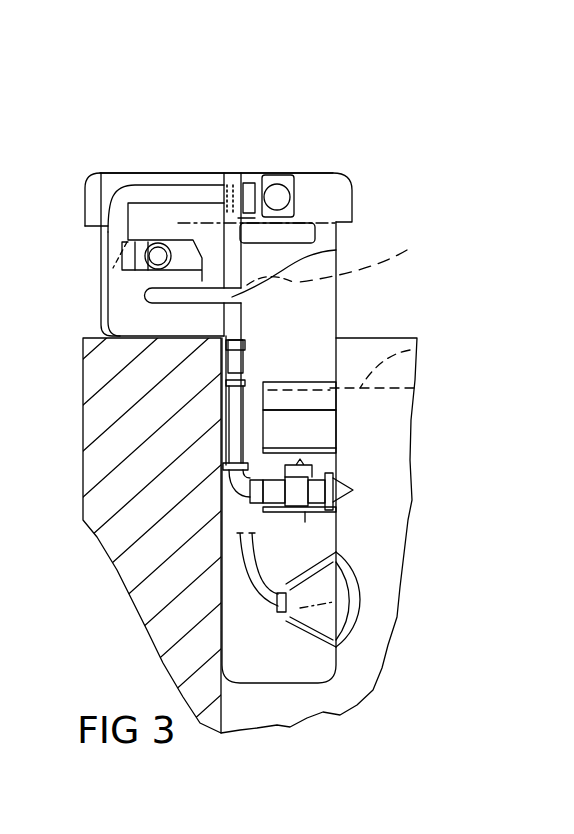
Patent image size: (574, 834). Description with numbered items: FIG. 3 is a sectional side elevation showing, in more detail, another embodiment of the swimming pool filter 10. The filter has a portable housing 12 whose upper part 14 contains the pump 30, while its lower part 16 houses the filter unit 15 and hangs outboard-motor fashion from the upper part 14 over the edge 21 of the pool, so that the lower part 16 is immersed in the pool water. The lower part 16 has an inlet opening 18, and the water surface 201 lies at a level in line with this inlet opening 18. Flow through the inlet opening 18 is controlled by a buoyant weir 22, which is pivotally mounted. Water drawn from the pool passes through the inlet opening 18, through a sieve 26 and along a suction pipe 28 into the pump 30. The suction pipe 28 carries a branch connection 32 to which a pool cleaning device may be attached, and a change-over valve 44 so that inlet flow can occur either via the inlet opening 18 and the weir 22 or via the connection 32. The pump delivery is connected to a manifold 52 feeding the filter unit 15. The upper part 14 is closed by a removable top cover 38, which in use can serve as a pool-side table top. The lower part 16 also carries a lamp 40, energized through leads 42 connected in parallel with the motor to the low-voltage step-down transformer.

The filter 10 is at (285, 83).
The portable housing 12 is at (360, 202).
The upper part 14 is at (88, 252).
The filter unit 15 is at (405, 255).
The lower part 16 is at (352, 297).
The inlet opening 18 is at (347, 415).
The surface 201 is at (410, 353).
The edge 21 is at (213, 343).
The buoyant weir 22 is at (331, 388).
The sieve 26 is at (282, 447).
The suction pipe 28 is at (333, 250).
The pump 30 is at (132, 310).
The branch connection 32 is at (360, 485).
The top cover 38 is at (297, 168).
The lamp 40 is at (363, 608).
The leads 42 is at (243, 572).
The change-over valve 44 is at (307, 516).
The manifold 52 is at (277, 193).